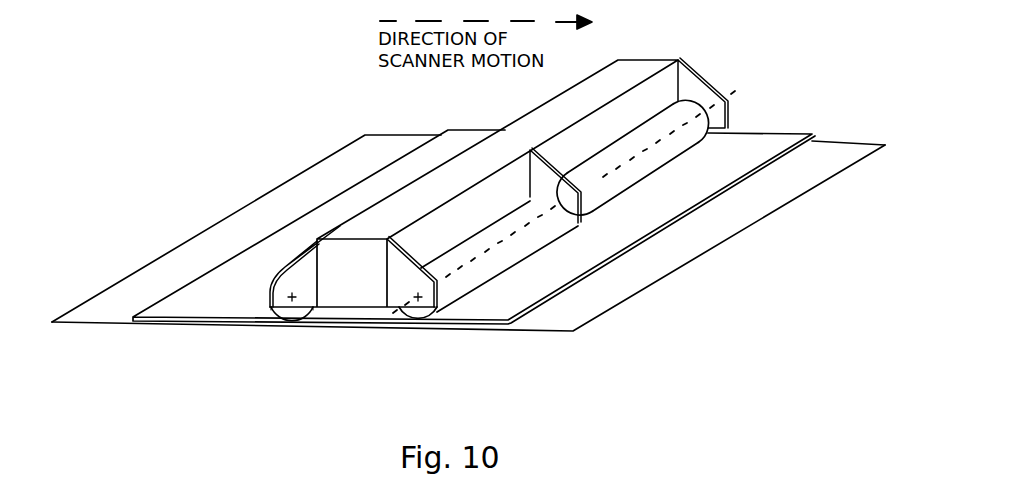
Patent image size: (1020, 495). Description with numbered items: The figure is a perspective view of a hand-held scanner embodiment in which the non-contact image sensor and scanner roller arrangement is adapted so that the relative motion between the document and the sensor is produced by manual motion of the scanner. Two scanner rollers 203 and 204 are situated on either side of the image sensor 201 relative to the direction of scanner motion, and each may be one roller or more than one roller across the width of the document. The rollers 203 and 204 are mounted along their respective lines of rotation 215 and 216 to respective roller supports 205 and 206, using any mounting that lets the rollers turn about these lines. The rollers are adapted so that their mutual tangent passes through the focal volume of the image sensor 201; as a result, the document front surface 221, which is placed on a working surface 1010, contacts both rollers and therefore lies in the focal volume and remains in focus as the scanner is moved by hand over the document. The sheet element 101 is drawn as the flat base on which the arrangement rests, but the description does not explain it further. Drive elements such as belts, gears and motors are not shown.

The document 101 is at (812, 134).
The working surface 1010 is at (588, 333).
The document front surface 221 is at (750, 147).
The image sensor 201 is at (448, 172).
The scanner roller 203 is at (678, 72).
The scanner roller 204 is at (283, 318).
The roller support 205 is at (710, 100).
The roller support 206 is at (304, 260).
The line of rotation 215 is at (420, 298).
The line of rotation 216 is at (292, 297).